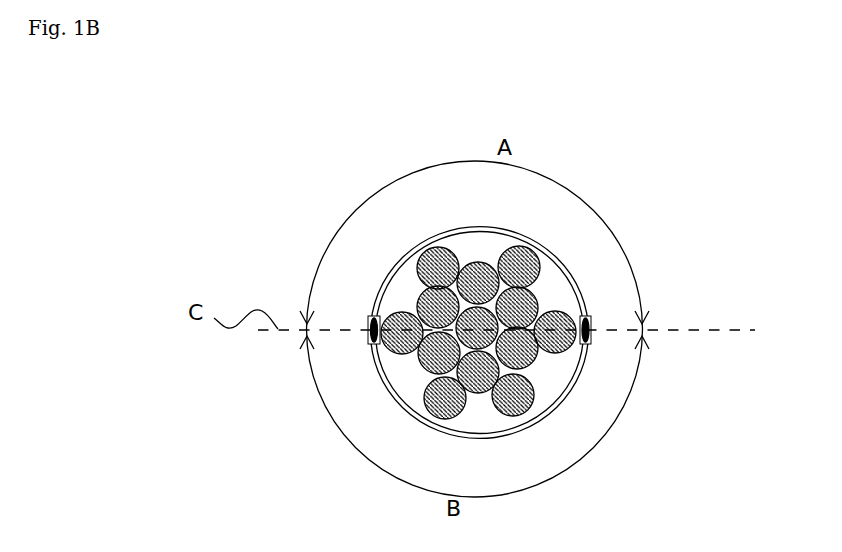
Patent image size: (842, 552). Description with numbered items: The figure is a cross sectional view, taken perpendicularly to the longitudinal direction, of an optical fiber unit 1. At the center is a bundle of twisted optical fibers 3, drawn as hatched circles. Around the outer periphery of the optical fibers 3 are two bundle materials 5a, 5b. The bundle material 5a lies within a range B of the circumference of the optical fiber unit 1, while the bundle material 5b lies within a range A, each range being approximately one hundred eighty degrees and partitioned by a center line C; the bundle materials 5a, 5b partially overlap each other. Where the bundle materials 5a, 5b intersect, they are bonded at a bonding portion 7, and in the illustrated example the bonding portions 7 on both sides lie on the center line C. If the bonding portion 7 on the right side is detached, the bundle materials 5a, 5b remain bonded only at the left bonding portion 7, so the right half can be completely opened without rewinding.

The optical fiber unit 1 is at (598, 160).
The optical fibers 3 is at (495, 362).
The bundle material 5a is at (525, 428).
The bundle material 5b is at (552, 262).
The bonding portion 7 is at (372, 318).